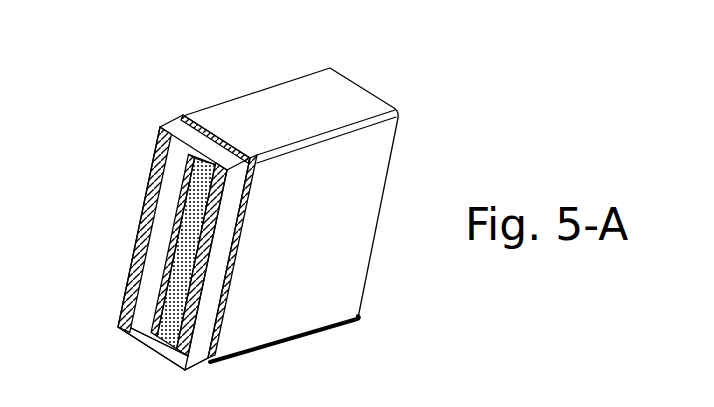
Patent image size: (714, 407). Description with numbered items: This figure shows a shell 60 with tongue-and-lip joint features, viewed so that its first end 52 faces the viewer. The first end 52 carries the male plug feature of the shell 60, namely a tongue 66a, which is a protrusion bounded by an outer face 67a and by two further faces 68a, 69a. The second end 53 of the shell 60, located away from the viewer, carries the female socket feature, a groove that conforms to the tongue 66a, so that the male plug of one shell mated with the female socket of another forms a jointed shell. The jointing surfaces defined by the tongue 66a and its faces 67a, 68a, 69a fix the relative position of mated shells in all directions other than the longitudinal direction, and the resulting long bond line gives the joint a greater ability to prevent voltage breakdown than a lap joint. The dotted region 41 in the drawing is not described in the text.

The filter mesh 41 is at (183, 193).
The first end 52 is at (132, 342).
The second end 53 is at (372, 80).
The shell 60 is at (290, 185).
The tongue 66a is at (175, 210).
The outer face 67a is at (138, 238).
The face 68a is at (167, 270).
The face 69a is at (238, 249).